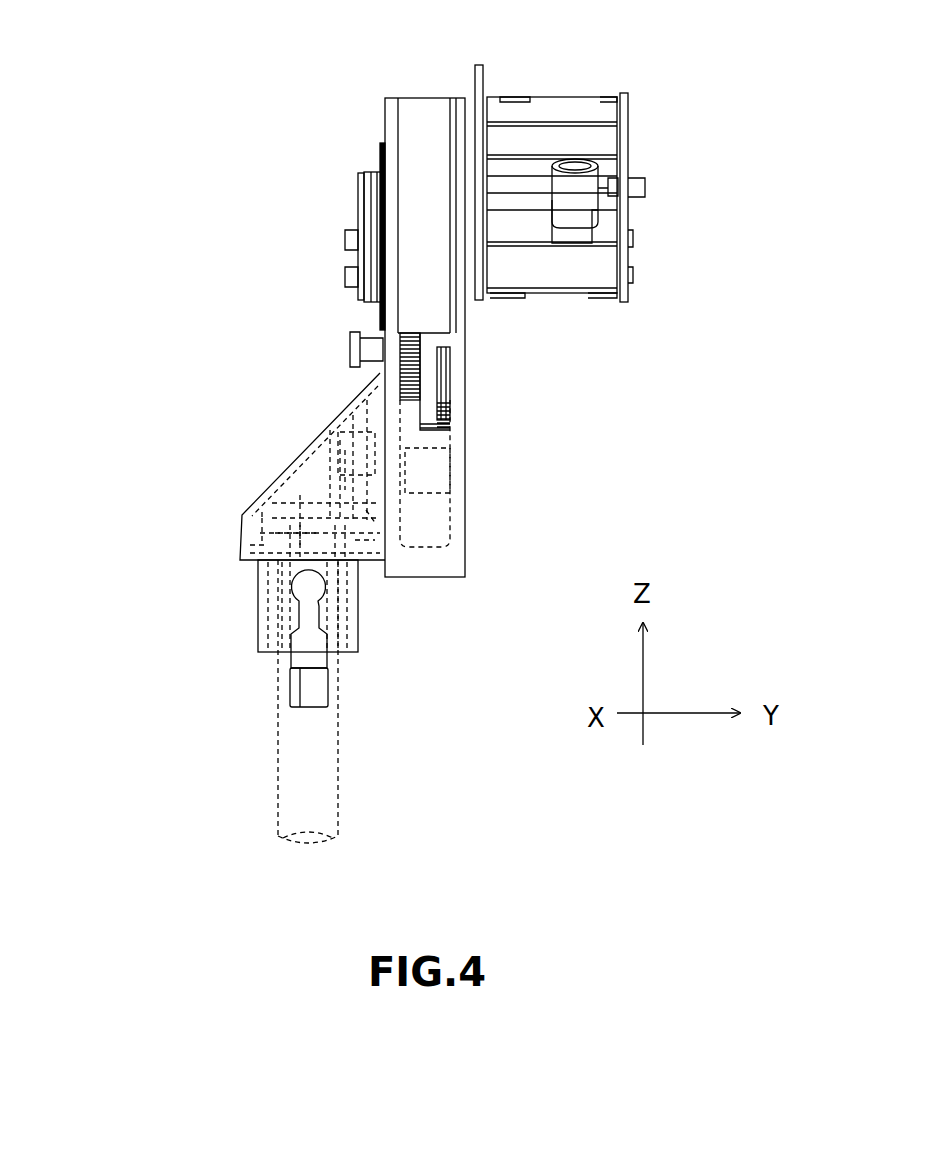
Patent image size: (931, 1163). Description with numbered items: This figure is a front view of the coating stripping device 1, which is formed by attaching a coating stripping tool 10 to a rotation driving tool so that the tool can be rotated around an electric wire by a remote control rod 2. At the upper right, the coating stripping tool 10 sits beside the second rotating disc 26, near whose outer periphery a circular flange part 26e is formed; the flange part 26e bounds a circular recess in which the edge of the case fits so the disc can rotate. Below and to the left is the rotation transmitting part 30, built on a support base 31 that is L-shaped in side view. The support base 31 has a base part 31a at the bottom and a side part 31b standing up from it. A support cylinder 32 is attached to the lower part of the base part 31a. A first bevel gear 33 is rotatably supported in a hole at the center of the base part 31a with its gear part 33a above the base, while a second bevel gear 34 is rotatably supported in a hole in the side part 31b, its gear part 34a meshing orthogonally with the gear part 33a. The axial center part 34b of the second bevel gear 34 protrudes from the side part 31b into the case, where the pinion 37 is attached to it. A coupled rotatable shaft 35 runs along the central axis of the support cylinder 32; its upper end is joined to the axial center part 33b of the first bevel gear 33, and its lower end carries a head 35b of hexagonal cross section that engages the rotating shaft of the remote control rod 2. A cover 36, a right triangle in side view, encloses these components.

The coating stripping device 1 is at (248, 82).
The remote control rod 2 is at (312, 772).
The coating stripping tool 10 is at (587, 93).
The second rotating disc 26 is at (362, 193).
The flange part 26e is at (380, 155).
The rotation transmitting part 30 is at (320, 390).
The support base 31 is at (363, 545).
The base part 31a is at (257, 547).
The side part 31b is at (372, 518).
The support cylinder 32 is at (268, 613).
The first bevel gear 33 is at (280, 517).
The gear part 33a is at (300, 505).
The axial center part 33b is at (293, 533).
The second bevel gear 34 is at (343, 460).
The gear part 34a is at (338, 475).
The axial center part 34b is at (425, 475).
The coupled rotatable shaft 35 is at (307, 648).
The head 35b is at (315, 687).
The cover 36 is at (253, 513).
The pinion 37 is at (425, 527).